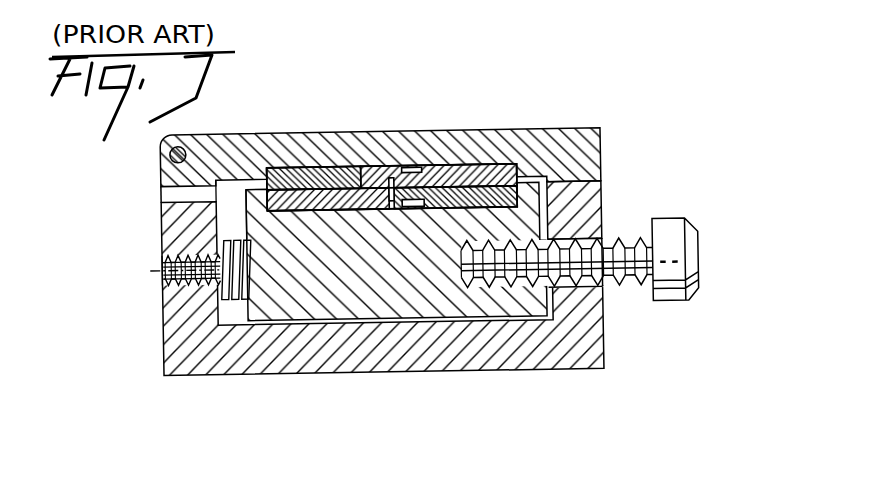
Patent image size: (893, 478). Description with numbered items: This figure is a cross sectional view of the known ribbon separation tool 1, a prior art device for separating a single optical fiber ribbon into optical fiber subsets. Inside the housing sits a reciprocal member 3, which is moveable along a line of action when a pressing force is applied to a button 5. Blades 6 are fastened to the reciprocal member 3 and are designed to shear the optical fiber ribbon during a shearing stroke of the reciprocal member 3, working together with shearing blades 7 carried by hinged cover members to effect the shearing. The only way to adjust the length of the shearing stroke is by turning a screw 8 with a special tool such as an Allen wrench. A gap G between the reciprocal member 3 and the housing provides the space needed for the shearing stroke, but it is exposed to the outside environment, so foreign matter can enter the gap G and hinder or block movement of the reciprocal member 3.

The ribbon separation tool 1 is at (607, 107).
The reciprocal member 3 is at (410, 303).
The button 5 is at (667, 250).
The blades 6 is at (482, 187).
The shearing blades 7 is at (362, 167).
The screw 8 is at (163, 269).
The gap G is at (232, 219).